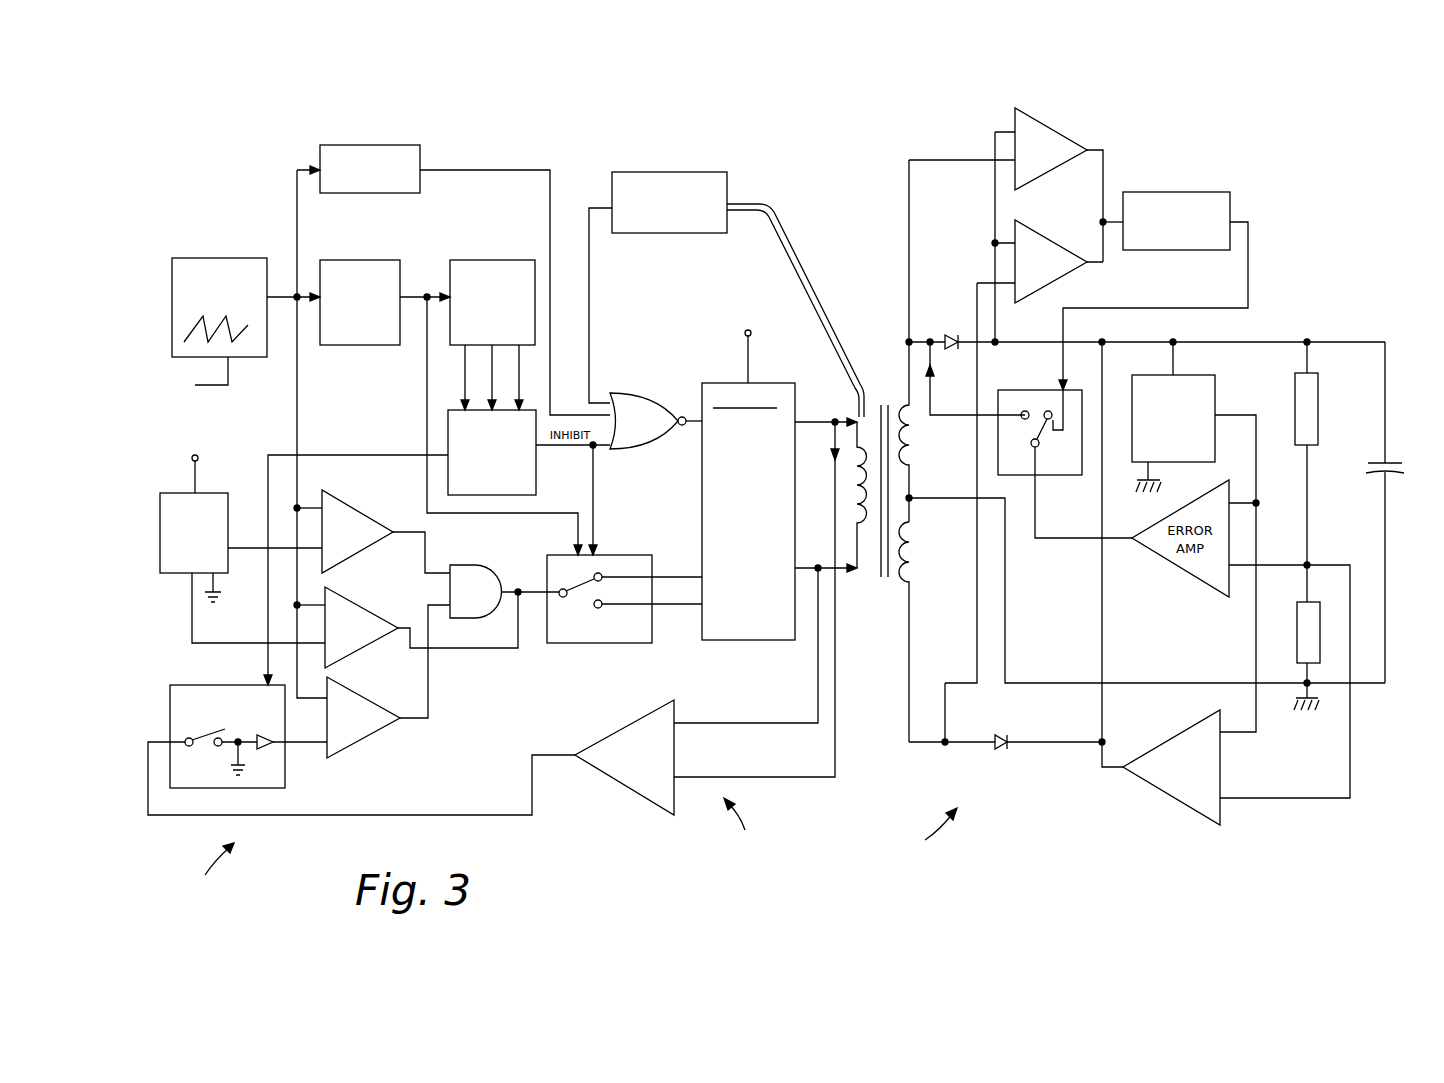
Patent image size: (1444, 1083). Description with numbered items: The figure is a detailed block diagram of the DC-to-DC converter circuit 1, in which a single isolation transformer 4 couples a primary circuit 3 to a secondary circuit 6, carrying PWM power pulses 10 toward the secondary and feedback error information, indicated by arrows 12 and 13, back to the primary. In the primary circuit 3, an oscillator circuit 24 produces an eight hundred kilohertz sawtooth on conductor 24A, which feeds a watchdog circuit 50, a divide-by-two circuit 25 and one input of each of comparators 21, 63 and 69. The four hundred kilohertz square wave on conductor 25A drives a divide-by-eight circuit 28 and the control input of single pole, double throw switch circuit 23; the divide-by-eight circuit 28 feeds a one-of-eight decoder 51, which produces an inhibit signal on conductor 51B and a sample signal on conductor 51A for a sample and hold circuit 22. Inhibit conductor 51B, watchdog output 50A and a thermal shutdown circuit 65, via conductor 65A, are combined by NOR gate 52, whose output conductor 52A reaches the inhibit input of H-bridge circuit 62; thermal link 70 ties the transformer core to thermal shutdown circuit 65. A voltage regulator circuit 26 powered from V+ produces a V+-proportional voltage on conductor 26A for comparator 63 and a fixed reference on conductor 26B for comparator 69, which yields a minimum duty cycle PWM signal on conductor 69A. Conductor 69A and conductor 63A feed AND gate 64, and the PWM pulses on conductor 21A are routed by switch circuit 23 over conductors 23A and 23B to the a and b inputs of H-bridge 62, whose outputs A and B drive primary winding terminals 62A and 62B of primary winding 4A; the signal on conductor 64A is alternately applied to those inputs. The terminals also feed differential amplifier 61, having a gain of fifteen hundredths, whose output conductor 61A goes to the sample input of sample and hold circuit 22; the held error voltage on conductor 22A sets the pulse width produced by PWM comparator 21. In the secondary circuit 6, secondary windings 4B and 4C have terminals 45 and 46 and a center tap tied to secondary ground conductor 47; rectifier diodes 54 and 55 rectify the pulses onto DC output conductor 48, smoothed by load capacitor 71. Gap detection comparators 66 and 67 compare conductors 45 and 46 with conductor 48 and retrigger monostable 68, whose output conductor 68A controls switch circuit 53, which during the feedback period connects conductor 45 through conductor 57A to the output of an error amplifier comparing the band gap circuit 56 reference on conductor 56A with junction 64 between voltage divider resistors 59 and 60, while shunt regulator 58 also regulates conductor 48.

The DC-to-DC converter circuit 1 is at (209, 866).
The primary circuit 3 is at (737, 827).
The isolation transformer 4 is at (882, 600).
The primary winding 4A is at (858, 479).
The secondary winding 4B is at (904, 424).
The secondary winding 4C is at (905, 548).
The secondary circuit 6 is at (929, 833).
The PWM power pulse 10 is at (850, 420).
The feedback error information arrow 12 is at (934, 371).
The feedback error information arrow 13 is at (833, 455).
The PWM comparator 21 is at (366, 741).
The conductor 21A is at (411, 741).
The sample and hold circuit 22 is at (172, 685).
The conductor 22A is at (300, 744).
The single pole, double throw switch circuit 23 is at (588, 644).
The conductor 23A is at (672, 577).
The conductor 23B is at (672, 606).
The oscillator circuit 24 is at (226, 258).
The conductor 24A is at (298, 381).
The divide-by-two circuit 25 is at (347, 260).
The conductor 25A is at (428, 296).
The voltage regulator circuit 26 is at (160, 515).
The conductor 26A is at (240, 547).
The conductor 26B is at (192, 596).
The divide-by-eight circuit 28 is at (505, 260).
The secondary winding terminal 45 is at (908, 342).
The secondary winding terminal 46 is at (945, 746).
The secondary ground conductor 47 is at (940, 498).
The DC output conductor 48 is at (1100, 756).
The watchdog circuit 50 is at (318, 152).
The watchdog output 50A is at (510, 170).
The 1-of-8 decoder 51 is at (536, 491).
The sample conductor 51A is at (392, 455).
The inhibit conductor 51B is at (593, 469).
The NOR gate 52 is at (646, 395).
The NOR gate output line 52A is at (691, 432).
The single pole, double throw switch circuit 53 is at (1052, 476).
The rectifier diode 54 is at (956, 335).
The rectifier diode 55 is at (1000, 749).
The band gap circuit 56 is at (1148, 375).
The conductor 56A is at (1245, 415).
The conductor 57A is at (1075, 540).
The shunt regulator 58 is at (1162, 795).
The voltage divider resistor 59 is at (1318, 416).
The voltage divider resistor 60 is at (1320, 613).
The differential amplifier 61 is at (646, 801).
The differential amplifier output line 61A is at (532, 800).
The H-bridge circuit 62 is at (752, 640).
The primary winding terminal 62A is at (834, 420).
The primary winding terminal 62B is at (820, 566).
The comparator 63 is at (362, 508).
The conductor 63A is at (393, 534).
The AND gate 64 is at (473, 565).
The conductor 64A is at (518, 590).
The thermal shutdown circuit 65 is at (697, 172).
The thermal shutdown output line 65A is at (595, 208).
The gap detection comparator 66 is at (1057, 246).
The gap detection comparator 67 is at (1059, 130).
The retriggerable monostable 68 is at (1180, 192).
The conductor 68A is at (1249, 242).
The comparator 69 is at (357, 601).
The conductor 69A is at (410, 649).
The thermal link 70 is at (820, 280).
The load capacitor 71 is at (1400, 463).